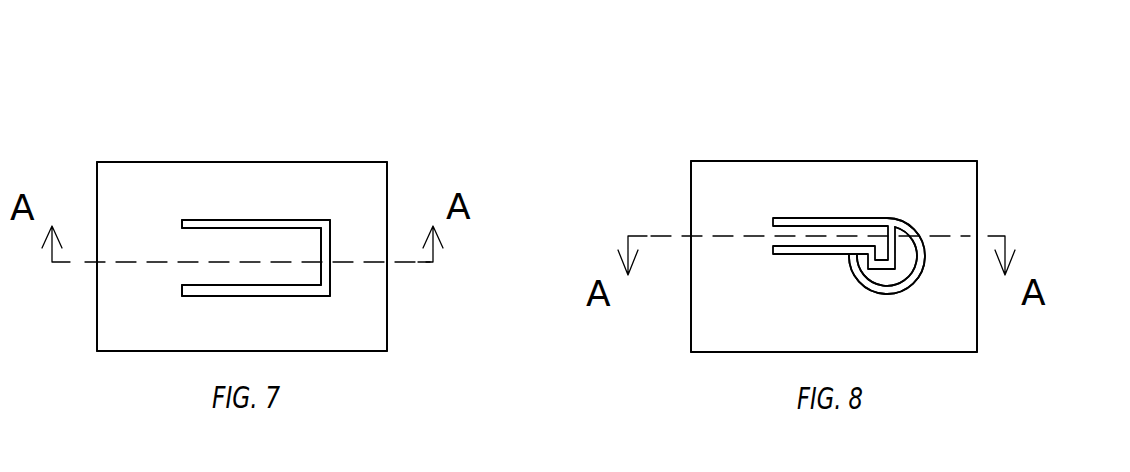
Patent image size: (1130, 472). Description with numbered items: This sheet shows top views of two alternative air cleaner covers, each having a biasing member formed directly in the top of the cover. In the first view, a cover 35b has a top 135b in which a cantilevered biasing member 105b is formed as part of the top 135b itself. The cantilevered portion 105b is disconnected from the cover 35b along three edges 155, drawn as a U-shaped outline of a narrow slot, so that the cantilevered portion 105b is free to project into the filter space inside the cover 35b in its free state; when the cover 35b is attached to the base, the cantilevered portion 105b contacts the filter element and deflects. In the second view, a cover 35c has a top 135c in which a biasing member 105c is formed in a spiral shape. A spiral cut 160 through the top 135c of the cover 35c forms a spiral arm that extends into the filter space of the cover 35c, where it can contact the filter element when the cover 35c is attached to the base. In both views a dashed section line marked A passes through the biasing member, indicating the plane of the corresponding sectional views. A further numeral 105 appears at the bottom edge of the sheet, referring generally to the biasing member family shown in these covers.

In FIG. 7, the substrate 35b is at (360, 340).
In FIG. 7, the surface layer 135b is at (117, 183).
In FIG. 7, the channel 105b is at (310, 240).
In FIG. 7, the channel wall 155 is at (240, 222).
In FIG. 8, the substrate 35c is at (929, 328).
In FIG. 8, the surface layer 135c is at (713, 173).
In FIG. 8, the channel 105c is at (881, 232).
In FIG. 8, the curled hook portion 160 is at (912, 228).
In FIG. 8, the channel 105 is at (769, 465).